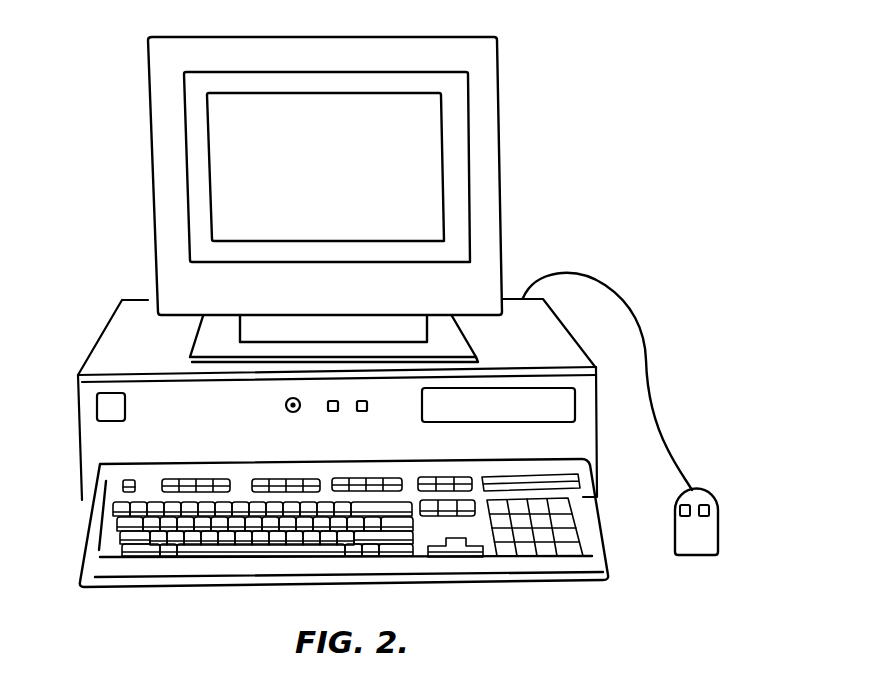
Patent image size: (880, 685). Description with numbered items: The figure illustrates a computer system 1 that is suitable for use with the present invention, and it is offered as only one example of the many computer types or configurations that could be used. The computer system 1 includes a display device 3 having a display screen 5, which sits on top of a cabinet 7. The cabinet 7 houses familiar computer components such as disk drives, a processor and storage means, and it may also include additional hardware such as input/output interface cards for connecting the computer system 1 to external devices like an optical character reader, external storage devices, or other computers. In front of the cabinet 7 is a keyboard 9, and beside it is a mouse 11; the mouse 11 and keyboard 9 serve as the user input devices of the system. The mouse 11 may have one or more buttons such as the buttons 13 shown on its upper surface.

The computer system 1 is at (649, 62).
The display device 3 is at (500, 146).
The display screen 5 is at (408, 135).
The cabinet 7 is at (547, 346).
The keyboard 9 is at (297, 587).
The mouse 11 is at (647, 414).
The buttons 13 is at (706, 500).